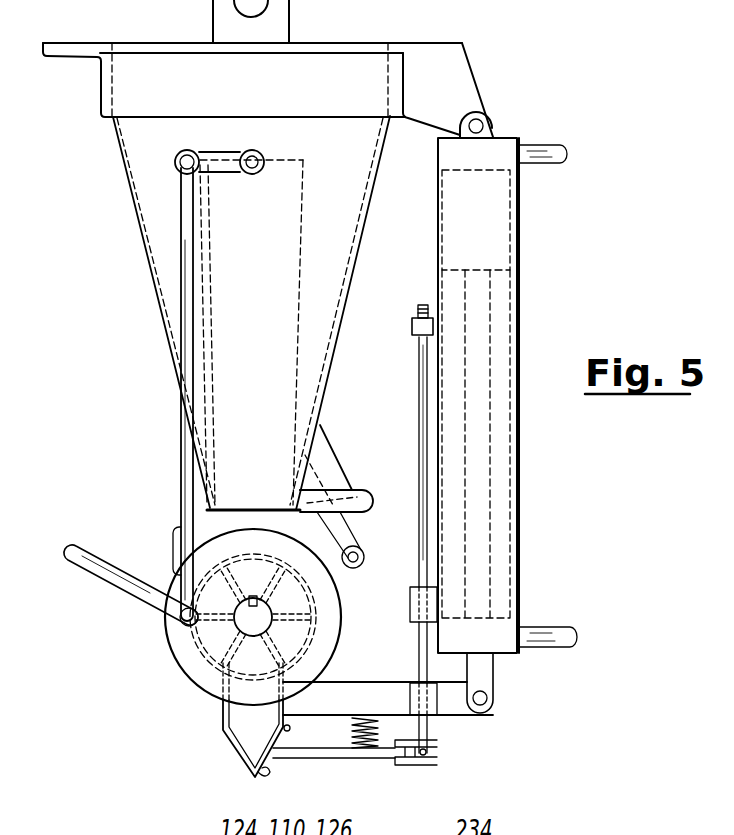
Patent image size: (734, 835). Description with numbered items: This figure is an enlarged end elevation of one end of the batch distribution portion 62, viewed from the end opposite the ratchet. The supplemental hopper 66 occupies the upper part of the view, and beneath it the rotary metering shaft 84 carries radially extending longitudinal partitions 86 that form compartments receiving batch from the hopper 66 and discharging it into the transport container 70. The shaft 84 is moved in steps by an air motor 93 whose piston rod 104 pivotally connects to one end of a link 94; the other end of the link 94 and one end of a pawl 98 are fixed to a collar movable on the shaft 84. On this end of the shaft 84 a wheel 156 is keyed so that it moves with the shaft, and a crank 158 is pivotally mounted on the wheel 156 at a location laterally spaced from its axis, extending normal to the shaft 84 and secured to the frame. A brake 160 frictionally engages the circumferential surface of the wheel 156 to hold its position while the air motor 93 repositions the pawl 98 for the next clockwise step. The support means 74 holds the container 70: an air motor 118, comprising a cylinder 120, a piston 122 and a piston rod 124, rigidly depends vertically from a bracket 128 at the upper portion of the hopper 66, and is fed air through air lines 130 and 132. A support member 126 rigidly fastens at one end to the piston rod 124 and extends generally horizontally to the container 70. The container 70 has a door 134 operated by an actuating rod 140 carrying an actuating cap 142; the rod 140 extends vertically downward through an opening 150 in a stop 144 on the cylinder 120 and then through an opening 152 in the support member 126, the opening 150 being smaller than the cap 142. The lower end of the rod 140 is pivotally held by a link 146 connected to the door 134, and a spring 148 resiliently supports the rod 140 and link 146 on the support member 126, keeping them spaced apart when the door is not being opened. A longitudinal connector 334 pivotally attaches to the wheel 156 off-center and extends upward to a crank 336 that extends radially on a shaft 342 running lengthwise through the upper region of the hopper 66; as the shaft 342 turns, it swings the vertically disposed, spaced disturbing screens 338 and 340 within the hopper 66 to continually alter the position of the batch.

The batch distribution portion 62 is at (238, 313).
The supplemental hopper 66 is at (137, 217).
The transport container 70 is at (238, 755).
The support means 74 is at (527, 667).
The shaft 84 is at (240, 624).
The longitudinal partitions 86 is at (193, 683).
The air motor 93 is at (328, 433).
The link 94 is at (352, 570).
The pawl 98 is at (173, 547).
The piston rod 104 is at (352, 525).
The air motor 118 is at (516, 395).
The cylinder 120 is at (517, 203).
The piston 122 is at (489, 265).
The piston rod 124 is at (497, 477).
The support member 126 is at (467, 717).
The bracket 128 is at (473, 72).
The air line 130 is at (553, 145).
The air line 132 is at (573, 608).
The door 134 is at (267, 773).
The actuating rod 140 is at (417, 358).
The actuating cap 142 is at (412, 328).
The stop 144 is at (393, 613).
The link 146 is at (378, 752).
The spring 148 is at (350, 738).
The opening 150 is at (410, 602).
The opening 152 is at (410, 693).
The wheel 156 is at (167, 632).
The crank 158 is at (80, 515).
The brake 160 is at (273, 508).
The longitudinal connector 334 is at (182, 467).
The crank 336 is at (227, 150).
The disturbing screen 338 is at (218, 197).
The disturbing screen 340 is at (313, 193).
The shaft 342 is at (253, 152).